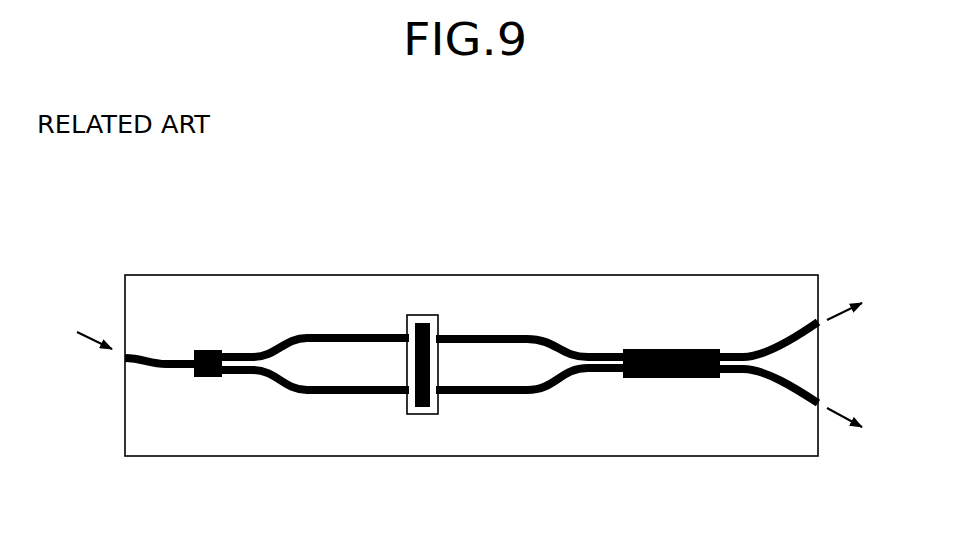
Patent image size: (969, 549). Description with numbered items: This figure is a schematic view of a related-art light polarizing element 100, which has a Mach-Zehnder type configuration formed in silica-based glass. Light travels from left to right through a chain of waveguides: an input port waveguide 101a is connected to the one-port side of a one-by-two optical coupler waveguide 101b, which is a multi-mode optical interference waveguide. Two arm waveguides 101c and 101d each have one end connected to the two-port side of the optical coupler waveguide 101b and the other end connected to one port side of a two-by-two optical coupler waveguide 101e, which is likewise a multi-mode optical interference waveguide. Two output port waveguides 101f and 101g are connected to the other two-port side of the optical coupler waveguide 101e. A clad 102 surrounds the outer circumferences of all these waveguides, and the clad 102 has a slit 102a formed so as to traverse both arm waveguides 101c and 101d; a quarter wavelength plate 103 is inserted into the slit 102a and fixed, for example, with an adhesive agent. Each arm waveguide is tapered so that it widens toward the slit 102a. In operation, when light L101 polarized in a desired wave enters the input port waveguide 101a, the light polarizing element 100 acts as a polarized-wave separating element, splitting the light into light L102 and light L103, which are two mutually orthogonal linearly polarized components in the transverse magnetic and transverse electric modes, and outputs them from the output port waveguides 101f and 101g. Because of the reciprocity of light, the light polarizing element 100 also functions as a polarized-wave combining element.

The light polarizing element 100 is at (545, 206).
The input port waveguide 101a is at (163, 359).
The 1×2 optical coupler waveguide 101b is at (207, 350).
The arm waveguide 101c is at (350, 334).
The arm waveguide 101d is at (337, 395).
The 2×2 optical coupler waveguide 101e is at (670, 350).
The output port waveguide 101f is at (775, 341).
The output port waveguide 101g is at (775, 391).
The clad 102 is at (165, 442).
The slit 102a is at (435, 405).
The quarter wavelength plate 103 is at (425, 323).
The light L101 is at (93, 338).
The light L102 is at (842, 310).
The light L103 is at (842, 410).